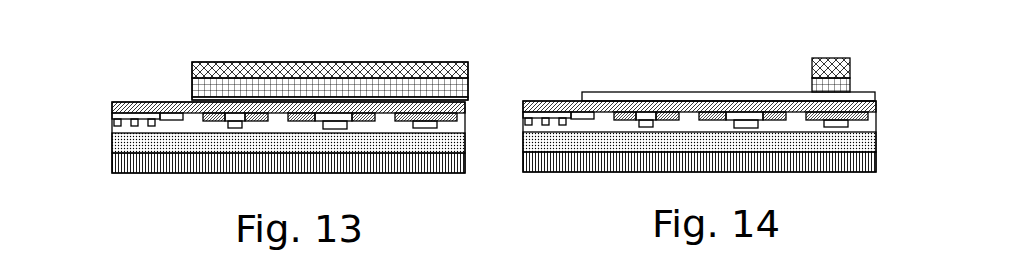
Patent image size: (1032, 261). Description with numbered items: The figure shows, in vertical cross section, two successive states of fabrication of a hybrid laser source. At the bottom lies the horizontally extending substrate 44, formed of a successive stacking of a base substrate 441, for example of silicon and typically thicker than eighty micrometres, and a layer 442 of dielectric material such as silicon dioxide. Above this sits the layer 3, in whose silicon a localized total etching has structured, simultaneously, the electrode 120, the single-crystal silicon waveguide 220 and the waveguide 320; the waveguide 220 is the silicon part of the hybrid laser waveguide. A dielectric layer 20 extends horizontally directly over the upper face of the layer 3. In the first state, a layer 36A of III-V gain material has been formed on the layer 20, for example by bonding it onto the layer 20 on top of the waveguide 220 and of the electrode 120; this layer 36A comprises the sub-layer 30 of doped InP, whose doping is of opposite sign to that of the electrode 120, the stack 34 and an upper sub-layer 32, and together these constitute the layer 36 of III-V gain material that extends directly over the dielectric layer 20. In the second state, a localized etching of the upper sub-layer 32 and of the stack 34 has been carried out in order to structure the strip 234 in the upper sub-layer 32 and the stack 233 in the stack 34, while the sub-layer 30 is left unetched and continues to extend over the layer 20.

In FIG. 13, the layer 3 is at (88, 104).
In FIG. 14, the layer 3 is at (519, 110).
In FIG. 13, the dielectric layer 20 is at (106, 107).
In FIG. 14, the dielectric layer 20 is at (517, 101).
In FIG. 13, the sub-layer of doped InP 30 is at (197, 99).
In FIG. 14, the sub-layer of doped InP 30 is at (638, 97).
In FIG. 13, the cover window 32 is at (192, 69).
In FIG. 13, the stack 34 is at (200, 89).
In FIG. 13, the layer comprising a III-V gain material 36 is at (281, 62).
In FIG. 13, the layer of III-V gain material 36A is at (267, 62).
In FIG. 13, the substrate 44 is at (240, 147).
In FIG. 14, the substrate 44 is at (652, 173).
In FIG. 13, the base substrate 441 is at (106, 165).
In FIG. 14, the base substrate 441 is at (517, 167).
In FIG. 13, the layer of dielectric material 442 is at (106, 144).
In FIG. 14, the layer of dielectric material 442 is at (517, 145).
In FIG. 13, the electrode 120 is at (218, 119).
In FIG. 14, the electrode 120 is at (630, 118).
In FIG. 13, the waveguide made of single-crystal silicon 220 is at (425, 119).
In FIG. 14, the waveguide made of single-crystal silicon 220 is at (838, 118).
In FIG. 13, the waveguide 320 is at (342, 119).
In FIG. 14, the waveguide 320 is at (748, 118).
In FIG. 14, the stack 233 is at (812, 85).
In FIG. 14, the strip 234 is at (820, 70).